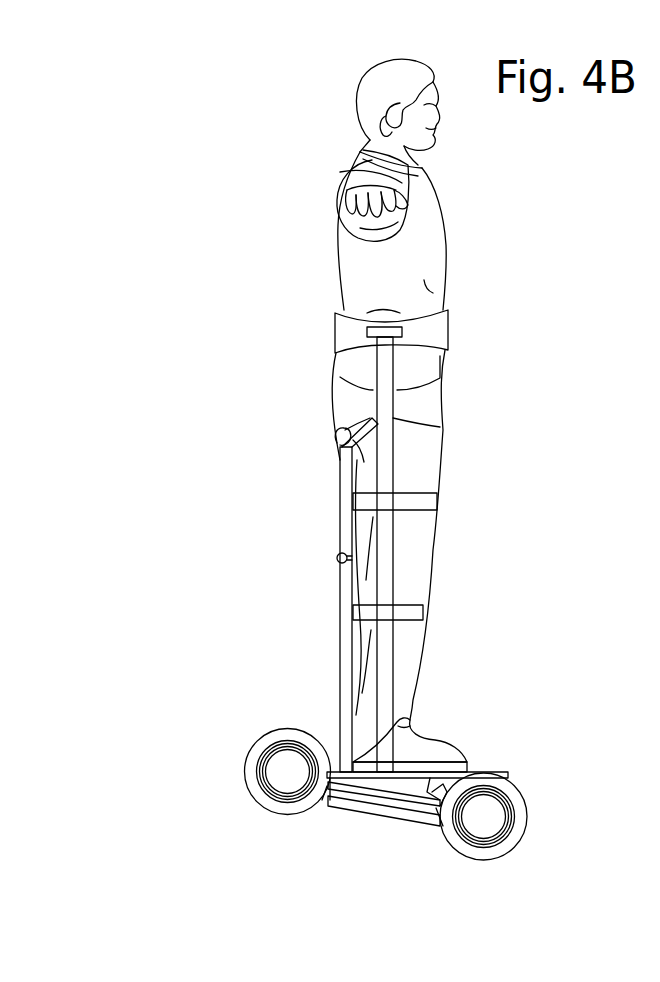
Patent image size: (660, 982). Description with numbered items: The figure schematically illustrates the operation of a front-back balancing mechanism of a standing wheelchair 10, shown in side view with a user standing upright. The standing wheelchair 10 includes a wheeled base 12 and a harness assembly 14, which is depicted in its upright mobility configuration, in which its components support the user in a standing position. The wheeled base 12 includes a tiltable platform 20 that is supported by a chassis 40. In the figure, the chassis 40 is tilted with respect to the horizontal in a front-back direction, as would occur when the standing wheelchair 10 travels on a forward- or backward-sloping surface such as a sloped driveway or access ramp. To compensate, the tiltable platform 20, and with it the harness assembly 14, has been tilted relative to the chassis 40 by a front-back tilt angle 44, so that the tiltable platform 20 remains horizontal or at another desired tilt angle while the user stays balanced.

The standing wheelchair 10 is at (490, 476).
The wheeled base 12 is at (530, 756).
The harness assembly 14 is at (300, 391).
The tiltable platform 20 is at (337, 801).
The chassis 40 is at (391, 814).
The front-back tilt angle 44 is at (428, 808).